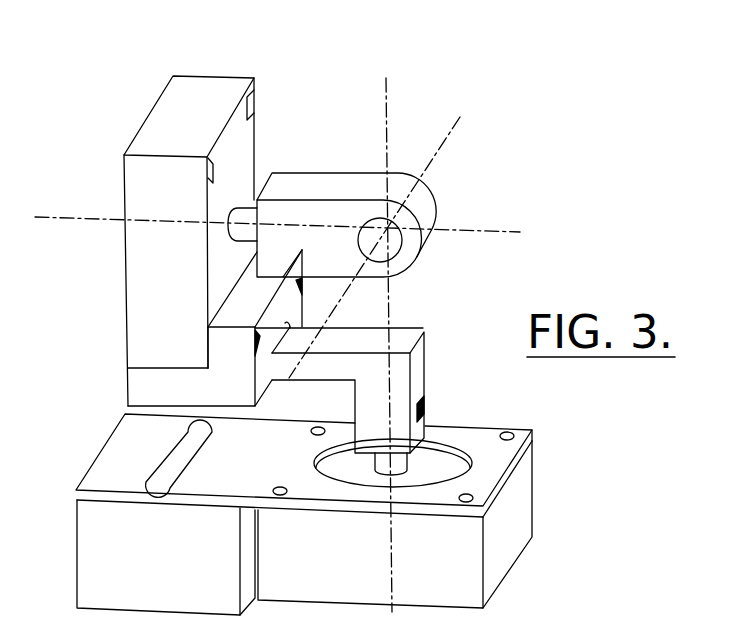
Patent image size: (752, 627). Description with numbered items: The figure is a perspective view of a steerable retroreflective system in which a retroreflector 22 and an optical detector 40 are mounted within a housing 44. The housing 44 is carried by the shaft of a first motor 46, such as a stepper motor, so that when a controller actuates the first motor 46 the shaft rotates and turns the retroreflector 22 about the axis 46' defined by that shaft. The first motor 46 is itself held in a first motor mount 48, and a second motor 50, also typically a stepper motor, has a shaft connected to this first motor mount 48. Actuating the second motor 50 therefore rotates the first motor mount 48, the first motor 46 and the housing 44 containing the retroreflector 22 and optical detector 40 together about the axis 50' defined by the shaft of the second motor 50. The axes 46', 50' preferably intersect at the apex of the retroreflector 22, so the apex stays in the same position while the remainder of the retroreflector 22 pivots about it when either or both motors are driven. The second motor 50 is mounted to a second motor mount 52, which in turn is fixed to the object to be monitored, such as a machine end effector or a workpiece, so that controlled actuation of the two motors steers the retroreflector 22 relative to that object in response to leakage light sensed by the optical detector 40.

The retroreflector 22 is at (380, 246).
The optical detector 40 is at (650, 623).
The housing 44 is at (332, 211).
The first motor 46 is at (190, 241).
The axis 46' is at (299, 232).
The first motor mount 48 is at (417, 370).
The second motor 50 is at (395, 524).
The axis 50' is at (383, 332).
The second motor mount 52 is at (100, 550).